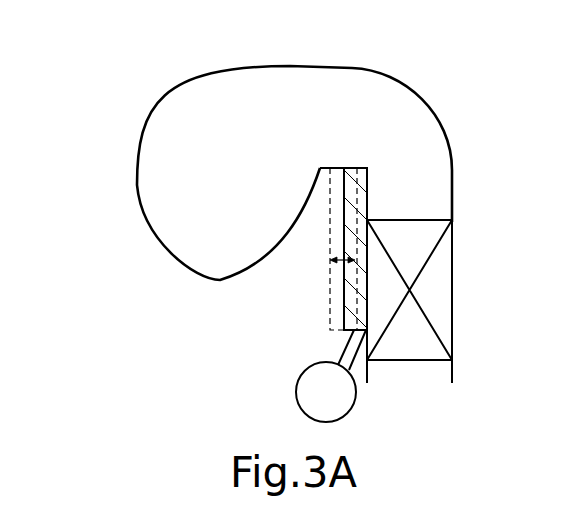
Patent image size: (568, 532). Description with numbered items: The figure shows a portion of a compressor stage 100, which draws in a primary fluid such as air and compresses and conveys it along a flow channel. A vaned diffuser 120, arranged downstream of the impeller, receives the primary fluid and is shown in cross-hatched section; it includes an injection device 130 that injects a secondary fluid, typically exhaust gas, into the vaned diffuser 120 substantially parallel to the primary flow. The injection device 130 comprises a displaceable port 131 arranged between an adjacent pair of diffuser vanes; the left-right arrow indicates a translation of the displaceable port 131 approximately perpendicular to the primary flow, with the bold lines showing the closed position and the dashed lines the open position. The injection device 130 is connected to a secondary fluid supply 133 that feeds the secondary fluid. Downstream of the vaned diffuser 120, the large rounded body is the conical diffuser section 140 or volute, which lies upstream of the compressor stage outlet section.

The compressor stage 100 is at (127, 91).
The vaned diffuser 120 is at (410, 205).
The injection device 130 is at (345, 288).
The displaceable port 131 is at (338, 238).
The secondary fluid supply 133 is at (310, 390).
The conical diffuser section 140 is at (137, 185).